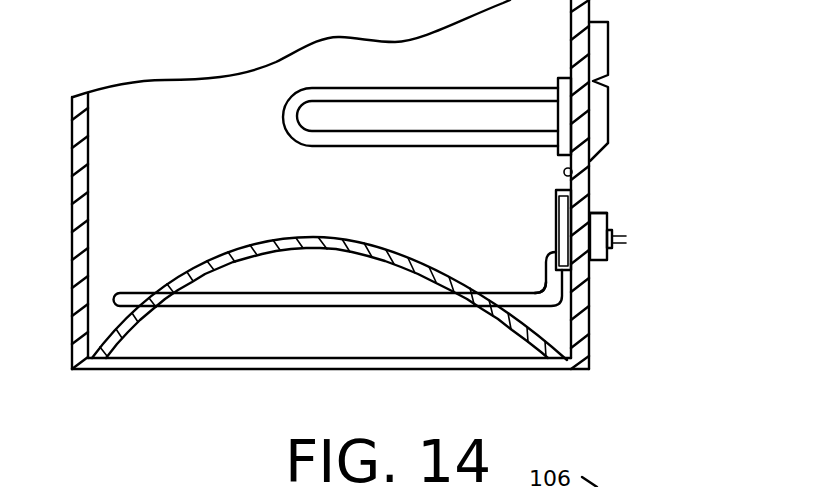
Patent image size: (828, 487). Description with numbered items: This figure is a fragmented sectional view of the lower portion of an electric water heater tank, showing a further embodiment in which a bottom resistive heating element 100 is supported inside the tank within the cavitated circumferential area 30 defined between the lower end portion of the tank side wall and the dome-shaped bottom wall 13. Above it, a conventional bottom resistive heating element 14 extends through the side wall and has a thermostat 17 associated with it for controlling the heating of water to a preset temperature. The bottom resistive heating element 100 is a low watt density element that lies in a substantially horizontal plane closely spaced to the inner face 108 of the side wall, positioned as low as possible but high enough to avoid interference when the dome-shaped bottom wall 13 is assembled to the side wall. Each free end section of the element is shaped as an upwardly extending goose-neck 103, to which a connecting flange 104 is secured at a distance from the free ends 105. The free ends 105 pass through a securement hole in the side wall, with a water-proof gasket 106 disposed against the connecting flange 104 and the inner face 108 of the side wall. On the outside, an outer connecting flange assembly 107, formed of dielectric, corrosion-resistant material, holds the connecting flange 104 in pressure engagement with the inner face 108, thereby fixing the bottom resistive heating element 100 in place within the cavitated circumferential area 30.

The dome-shaped bottom wall 13 is at (292, 253).
The bottom resistive heating element 14 is at (483, 88).
The thermostat 17 is at (609, 107).
The cavitated circumferential area 30 is at (116, 284).
The bottom resistive heating element 100 is at (400, 306).
The goose-neck 103 is at (538, 283).
The connecting flange 104 is at (555, 222).
The free ends 105 is at (613, 233).
The water-proof gasket 106 is at (560, 195).
The outer connecting flange assembly 107 is at (601, 212).
The inner face of the side wall 108 is at (605, 159).